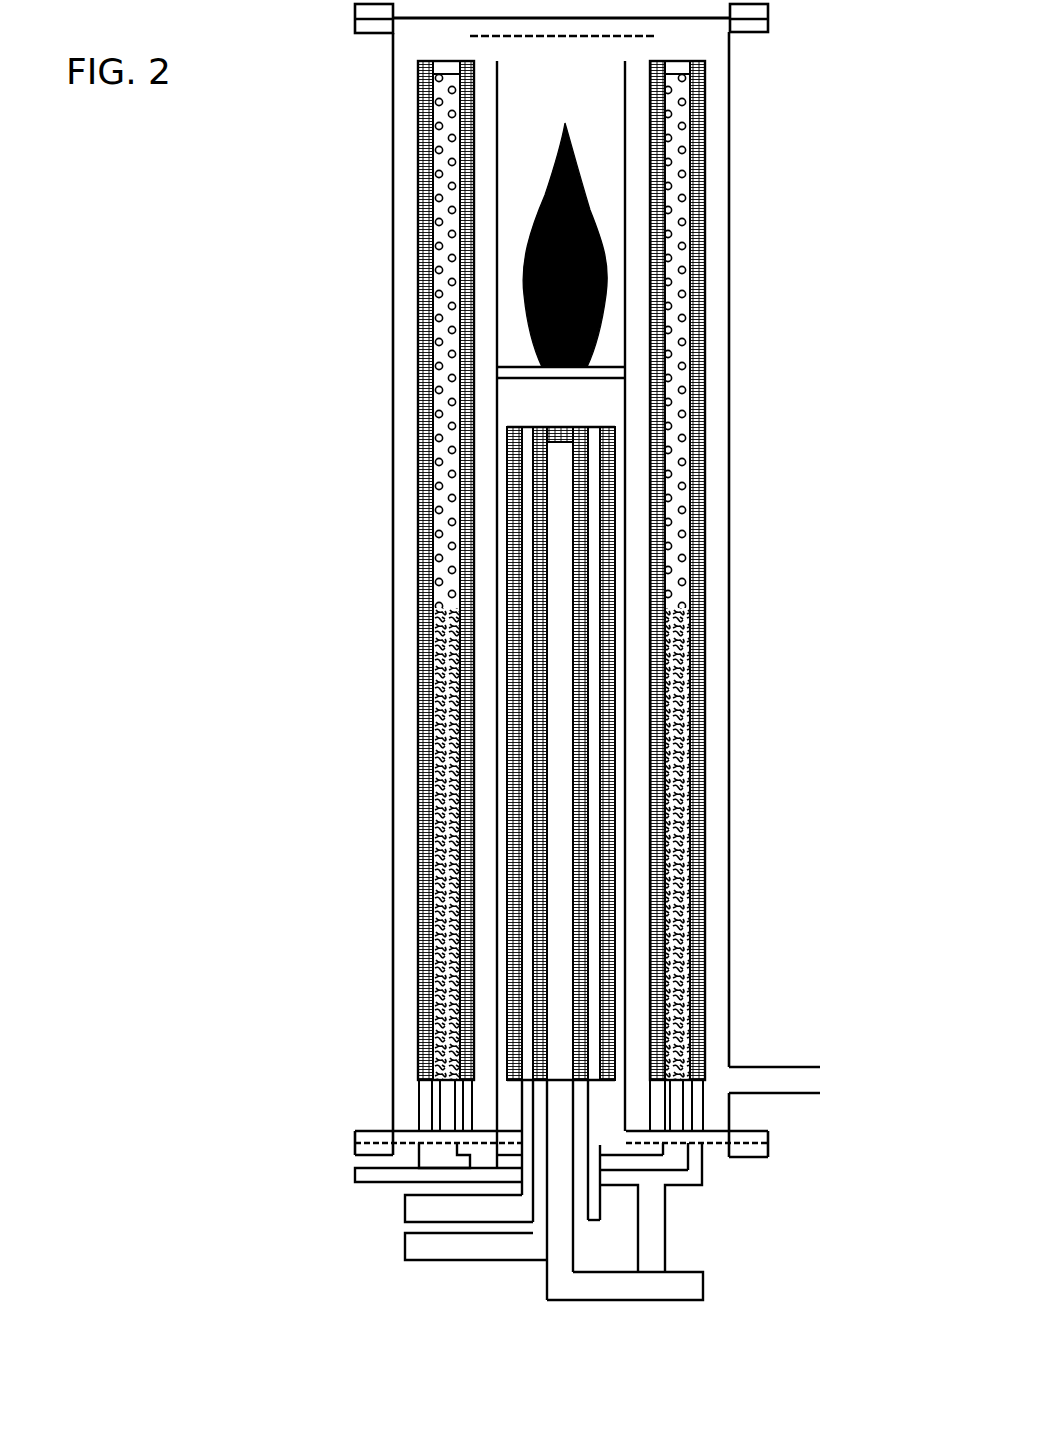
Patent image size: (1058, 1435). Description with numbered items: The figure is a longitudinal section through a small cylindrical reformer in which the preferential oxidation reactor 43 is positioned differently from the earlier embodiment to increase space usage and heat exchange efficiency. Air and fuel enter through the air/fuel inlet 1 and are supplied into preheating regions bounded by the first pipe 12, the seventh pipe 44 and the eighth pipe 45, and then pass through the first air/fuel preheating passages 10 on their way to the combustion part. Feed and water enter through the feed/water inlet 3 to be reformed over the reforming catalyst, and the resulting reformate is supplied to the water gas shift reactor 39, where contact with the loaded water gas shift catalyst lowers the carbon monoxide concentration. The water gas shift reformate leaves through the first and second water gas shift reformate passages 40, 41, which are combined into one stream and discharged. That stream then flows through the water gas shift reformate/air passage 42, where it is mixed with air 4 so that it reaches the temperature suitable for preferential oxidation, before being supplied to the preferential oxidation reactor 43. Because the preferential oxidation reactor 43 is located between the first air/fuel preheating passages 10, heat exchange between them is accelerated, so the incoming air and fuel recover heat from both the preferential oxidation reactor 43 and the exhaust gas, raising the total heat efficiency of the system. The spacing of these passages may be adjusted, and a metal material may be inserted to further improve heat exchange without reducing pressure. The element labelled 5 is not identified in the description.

The air/fuel inlet 1 is at (405, 1210).
The feed/water inlet 3 is at (355, 1178).
The air 4 is at (692, 1285).
The gas supply pipe 5 is at (405, 1250).
The first air/fuel preheating passages 10 is at (593, 822).
The first pipe 12 is at (627, 933).
The water gas shift reactor 39 is at (417, 912).
The first water gas shift reformate passage 40 is at (445, 1102).
The second water gas shift reformate passage 41 is at (653, 1227).
The water gas shift reformate/air passage 42 is at (562, 935).
The preferential oxidation reactor 43 is at (508, 866).
The seventh pipe 44 is at (533, 820).
The eighth pipe 45 is at (518, 758).